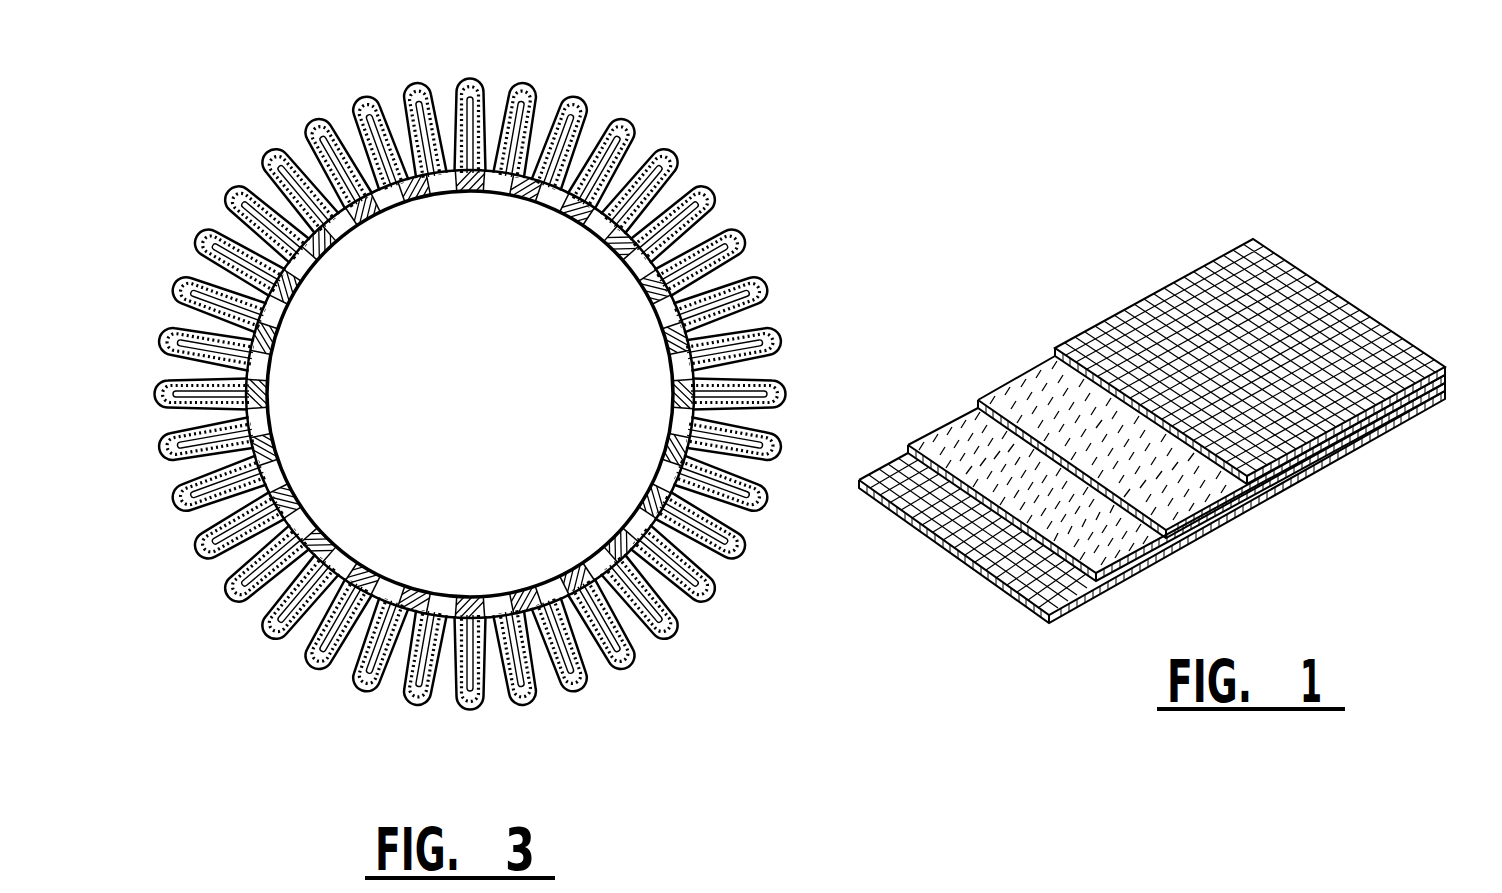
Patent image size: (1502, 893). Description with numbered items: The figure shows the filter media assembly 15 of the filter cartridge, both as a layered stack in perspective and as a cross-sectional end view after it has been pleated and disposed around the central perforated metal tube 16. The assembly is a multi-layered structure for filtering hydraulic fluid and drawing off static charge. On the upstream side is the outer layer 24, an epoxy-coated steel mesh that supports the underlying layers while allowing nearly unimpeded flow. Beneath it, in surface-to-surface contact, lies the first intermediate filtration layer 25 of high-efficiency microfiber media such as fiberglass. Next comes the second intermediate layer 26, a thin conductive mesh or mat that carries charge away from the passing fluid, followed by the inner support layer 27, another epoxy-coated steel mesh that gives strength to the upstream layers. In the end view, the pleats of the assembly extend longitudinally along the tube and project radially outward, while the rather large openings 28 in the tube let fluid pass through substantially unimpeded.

In FIG. 3, the filter media assembly 15 is at (521, 419).
In FIG. 1, the filter media assembly 15 is at (1169, 438).
In FIG. 3, the central perforated metal tube 16 is at (446, 600).
In FIG. 1, the outer or upstream layer 24 is at (1203, 268).
In FIG. 1, the first intermediate filtration layer 25 is at (1047, 359).
In FIG. 1, the second intermediate layer 26 is at (972, 419).
In FIG. 1, the inner or downstream support layer 27 is at (1030, 594).
In FIG. 3, the openings 28 is at (630, 528).